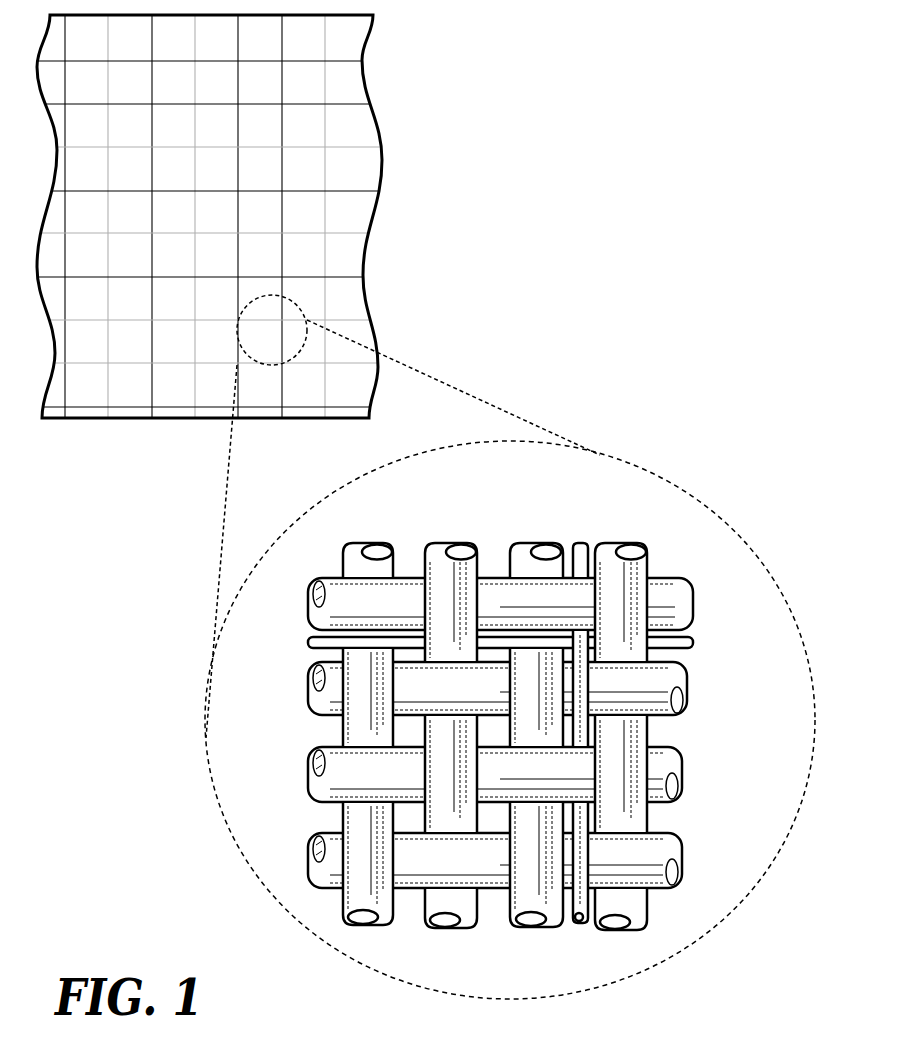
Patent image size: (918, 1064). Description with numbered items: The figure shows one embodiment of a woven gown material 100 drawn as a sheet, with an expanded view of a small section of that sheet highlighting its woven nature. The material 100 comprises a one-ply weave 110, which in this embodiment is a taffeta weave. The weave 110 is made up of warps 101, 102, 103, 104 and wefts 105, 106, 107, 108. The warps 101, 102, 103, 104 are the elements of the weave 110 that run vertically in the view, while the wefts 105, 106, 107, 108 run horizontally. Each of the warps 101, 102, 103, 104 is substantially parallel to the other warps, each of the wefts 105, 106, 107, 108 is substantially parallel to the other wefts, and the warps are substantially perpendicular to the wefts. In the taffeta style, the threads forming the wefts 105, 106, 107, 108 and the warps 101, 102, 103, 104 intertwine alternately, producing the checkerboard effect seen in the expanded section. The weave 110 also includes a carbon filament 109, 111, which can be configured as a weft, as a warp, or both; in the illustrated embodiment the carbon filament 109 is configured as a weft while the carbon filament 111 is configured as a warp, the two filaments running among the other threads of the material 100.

The material 100 is at (422, 504).
The warp 101 is at (364, 548).
The warp 102 is at (443, 548).
The warp 103 is at (523, 548).
The warp 104 is at (608, 548).
The weft 105 is at (688, 597).
The weft 106 is at (680, 677).
The weft 107 is at (668, 767).
The weft 108 is at (665, 847).
The carbon filament 109 is at (579, 922).
The weave 110 is at (383, 160).
The carbon filament 111 is at (690, 643).